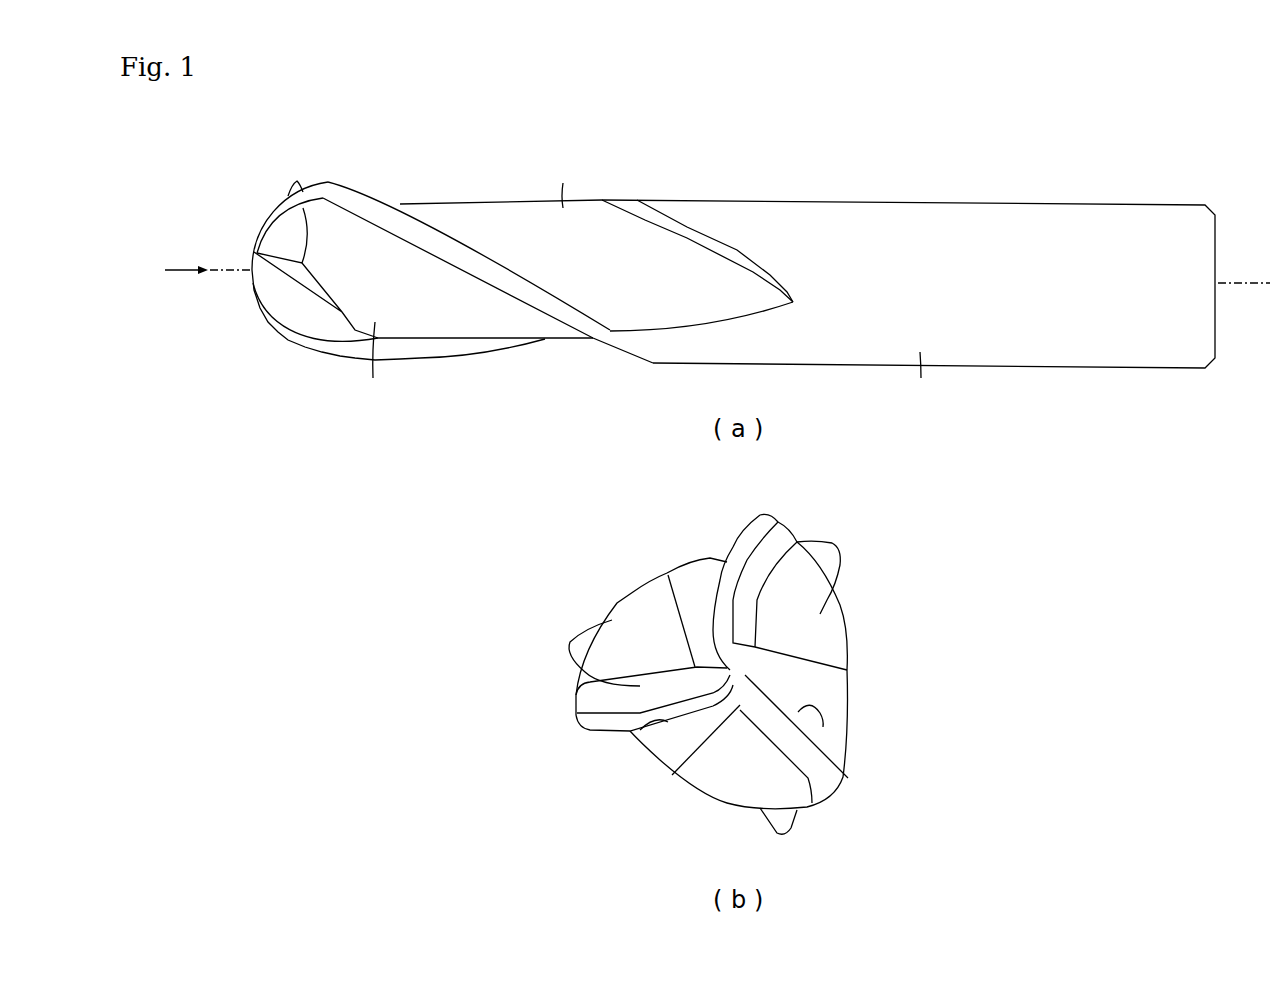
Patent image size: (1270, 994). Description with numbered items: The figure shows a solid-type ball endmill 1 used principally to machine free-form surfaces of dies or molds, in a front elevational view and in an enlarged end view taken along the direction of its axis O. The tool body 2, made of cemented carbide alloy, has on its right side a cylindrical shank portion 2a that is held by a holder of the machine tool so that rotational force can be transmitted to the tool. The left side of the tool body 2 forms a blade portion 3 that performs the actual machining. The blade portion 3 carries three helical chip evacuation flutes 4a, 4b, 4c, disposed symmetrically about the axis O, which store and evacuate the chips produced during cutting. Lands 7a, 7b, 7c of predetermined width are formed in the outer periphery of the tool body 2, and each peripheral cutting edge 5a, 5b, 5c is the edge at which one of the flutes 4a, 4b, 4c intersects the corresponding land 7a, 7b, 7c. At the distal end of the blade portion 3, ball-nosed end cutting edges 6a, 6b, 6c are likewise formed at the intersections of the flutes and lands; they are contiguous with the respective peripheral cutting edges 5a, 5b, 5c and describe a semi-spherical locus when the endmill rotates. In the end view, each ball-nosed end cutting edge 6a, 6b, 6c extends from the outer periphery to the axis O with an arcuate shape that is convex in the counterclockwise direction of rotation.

The ball endmill 1 is at (972, 166).
The tool body 2 is at (996, 388).
The shank portion 2a is at (919, 380).
The blade portion 3 is at (432, 169).
The chip evacuation flute 4a is at (893, 742).
The chip evacuation flute 4b is at (593, 778).
The chip evacuation flute 4c is at (701, 582).
The peripheral cutting edge 5a is at (422, 358).
The peripheral cutting edge 5b is at (452, 230).
The peripheral cutting edge 5c is at (821, 612).
The ball-nosed end cutting edge 6a is at (280, 309).
The ball-nosed end cutting edge 6b is at (312, 200).
The ball-nosed end cutting edge 6c is at (720, 584).
The land 7a is at (840, 767).
The land 7b is at (530, 292).
The land 7c is at (762, 514).
The axis O is at (246, 269).